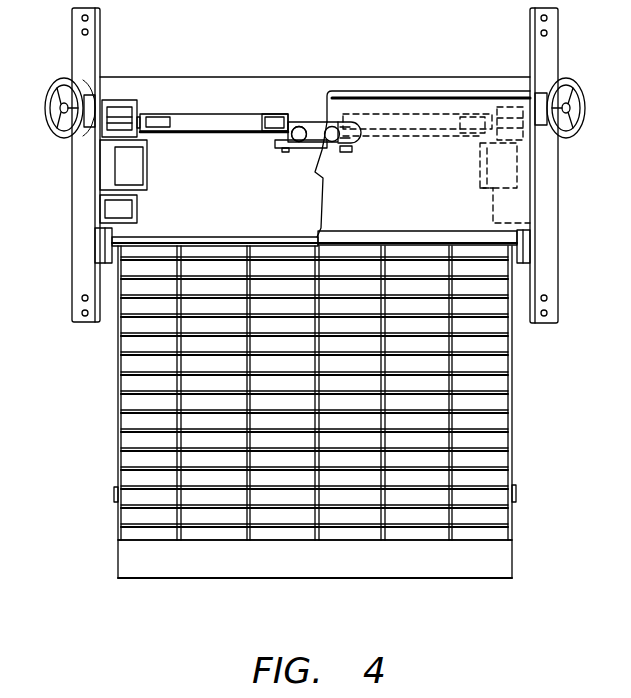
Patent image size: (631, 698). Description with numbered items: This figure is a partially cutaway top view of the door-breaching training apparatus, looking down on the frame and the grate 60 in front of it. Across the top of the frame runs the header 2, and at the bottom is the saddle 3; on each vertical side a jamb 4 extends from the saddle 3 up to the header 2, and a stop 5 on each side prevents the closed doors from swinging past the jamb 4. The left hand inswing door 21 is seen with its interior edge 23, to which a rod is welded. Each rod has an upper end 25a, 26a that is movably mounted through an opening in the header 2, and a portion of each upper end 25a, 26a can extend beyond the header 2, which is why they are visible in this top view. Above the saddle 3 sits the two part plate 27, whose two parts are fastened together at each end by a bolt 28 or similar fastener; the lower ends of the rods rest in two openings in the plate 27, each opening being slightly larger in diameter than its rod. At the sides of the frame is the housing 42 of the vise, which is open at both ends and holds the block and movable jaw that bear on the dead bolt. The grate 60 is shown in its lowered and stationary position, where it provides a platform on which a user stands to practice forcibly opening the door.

The header 2 is at (423, 181).
The saddle 3 is at (233, 223).
The jamb 4 is at (118, 105).
The stop 5 is at (148, 162).
The left hand inswing door 21 is at (223, 126).
The interior edge 23 is at (289, 125).
The upper end 25a is at (302, 127).
The upper end 26a is at (333, 126).
The two part plate 27 is at (306, 148).
The bolt 28 is at (281, 152).
The housing 42 is at (84, 93).
The grate 60 is at (513, 382).